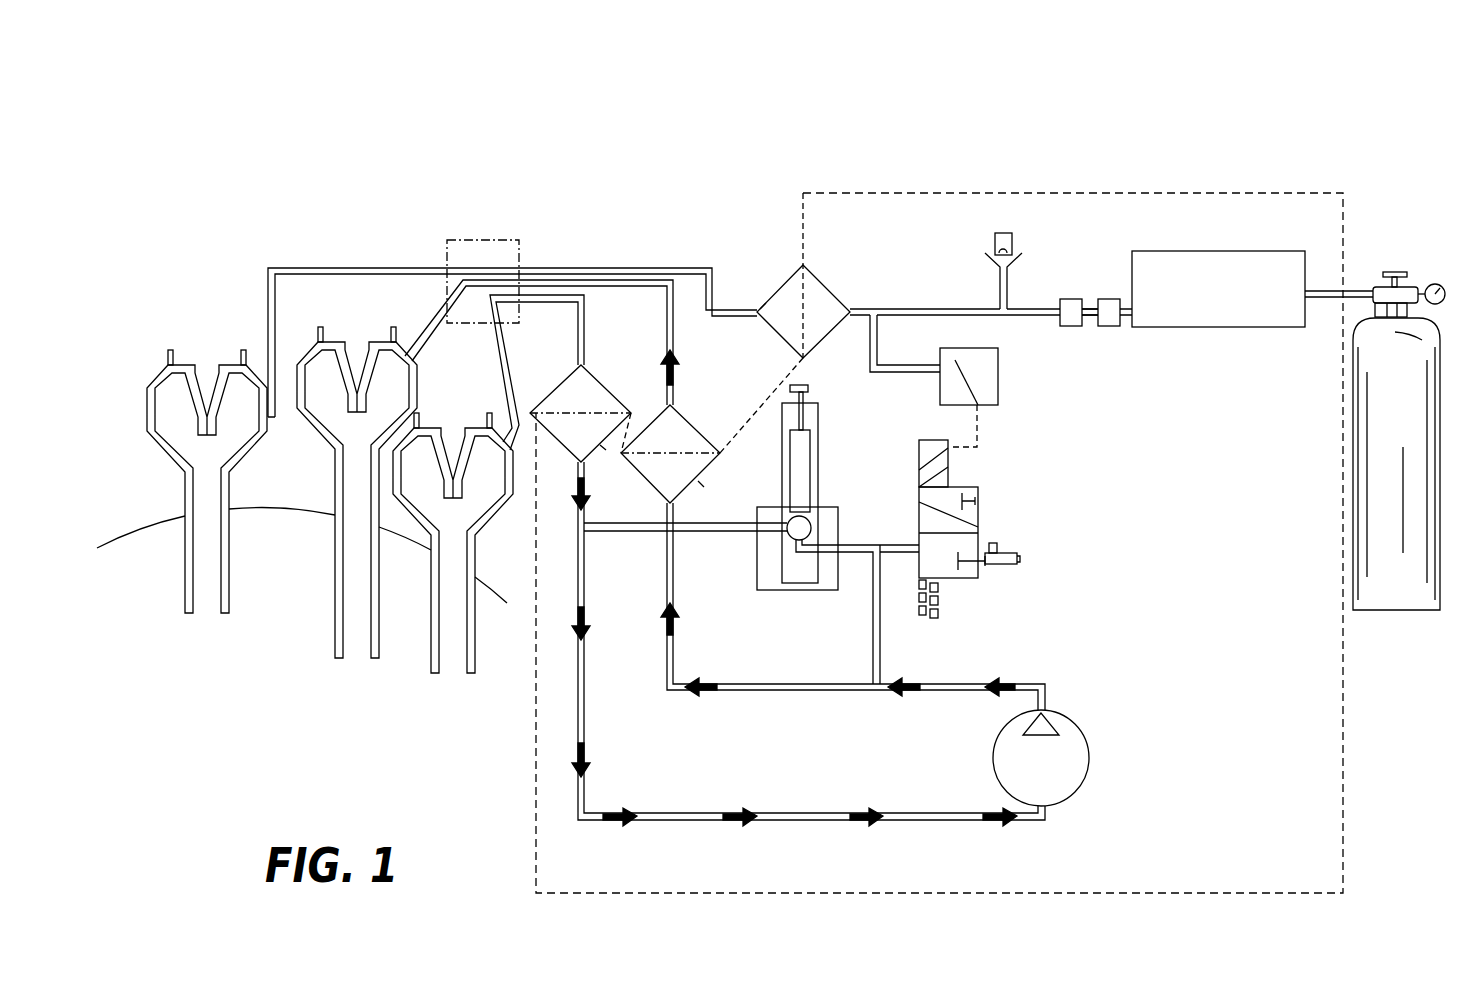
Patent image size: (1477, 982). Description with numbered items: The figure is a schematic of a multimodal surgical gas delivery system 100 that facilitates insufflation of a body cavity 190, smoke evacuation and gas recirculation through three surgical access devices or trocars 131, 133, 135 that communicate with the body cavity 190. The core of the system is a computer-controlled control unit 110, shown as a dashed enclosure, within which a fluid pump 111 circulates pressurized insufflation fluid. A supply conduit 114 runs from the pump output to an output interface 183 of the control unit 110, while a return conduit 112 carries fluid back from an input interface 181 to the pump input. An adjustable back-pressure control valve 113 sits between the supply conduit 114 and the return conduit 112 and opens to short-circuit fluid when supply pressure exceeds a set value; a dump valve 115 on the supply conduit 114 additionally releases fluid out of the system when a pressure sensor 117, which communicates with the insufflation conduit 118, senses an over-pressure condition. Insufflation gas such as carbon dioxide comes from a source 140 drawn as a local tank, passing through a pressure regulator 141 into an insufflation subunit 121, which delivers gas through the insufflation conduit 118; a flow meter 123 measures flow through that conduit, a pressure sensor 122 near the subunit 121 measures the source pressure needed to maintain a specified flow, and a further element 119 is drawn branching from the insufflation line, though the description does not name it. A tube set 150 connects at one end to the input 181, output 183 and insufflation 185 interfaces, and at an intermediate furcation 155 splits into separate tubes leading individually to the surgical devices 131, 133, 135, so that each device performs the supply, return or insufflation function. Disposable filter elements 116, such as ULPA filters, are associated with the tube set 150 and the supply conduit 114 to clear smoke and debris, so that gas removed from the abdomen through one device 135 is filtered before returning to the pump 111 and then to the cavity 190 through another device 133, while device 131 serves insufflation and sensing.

The multimodal surgical gas delivery system 100 is at (1052, 92).
The control unit 110 is at (1183, 891).
The fluid pump 111 is at (1088, 772).
The return conduit 112 is at (585, 722).
The back-pressure control valve 113 is at (838, 507).
The supply conduit 114 is at (760, 692).
The dump valve 115 is at (968, 582).
The filter 116 is at (764, 332).
The pressure sensor 117 is at (998, 375).
The insufflation conduit 118 is at (1090, 308).
The vent 119 is at (1024, 263).
The insufflation subunit 121 is at (1218, 289).
The pressure sensor 122 is at (1108, 327).
The flow meter 123 is at (1068, 327).
The surgical access device 131 is at (185, 598).
The surgical access device 133 is at (335, 645).
The surgical access device 135 is at (431, 668).
The insufflation gas source 140 is at (1396, 464).
The pressure regulator 141 is at (1415, 287).
The tube set 150 is at (640, 268).
The furcation 155 is at (479, 240).
The input interface 181 is at (617, 400).
The output interface 183 is at (702, 436).
The insufflation interface 185 is at (775, 293).
The body cavity 190 is at (134, 556).